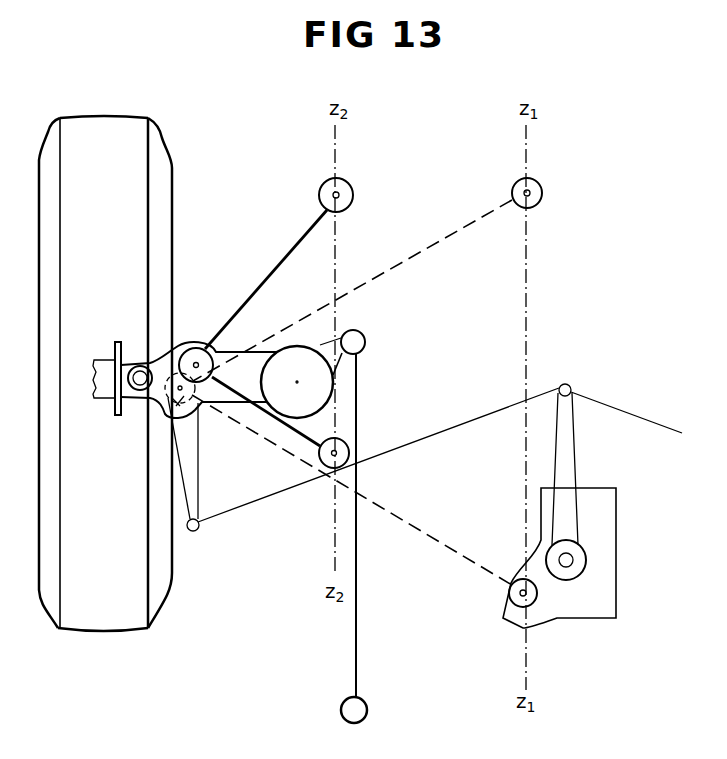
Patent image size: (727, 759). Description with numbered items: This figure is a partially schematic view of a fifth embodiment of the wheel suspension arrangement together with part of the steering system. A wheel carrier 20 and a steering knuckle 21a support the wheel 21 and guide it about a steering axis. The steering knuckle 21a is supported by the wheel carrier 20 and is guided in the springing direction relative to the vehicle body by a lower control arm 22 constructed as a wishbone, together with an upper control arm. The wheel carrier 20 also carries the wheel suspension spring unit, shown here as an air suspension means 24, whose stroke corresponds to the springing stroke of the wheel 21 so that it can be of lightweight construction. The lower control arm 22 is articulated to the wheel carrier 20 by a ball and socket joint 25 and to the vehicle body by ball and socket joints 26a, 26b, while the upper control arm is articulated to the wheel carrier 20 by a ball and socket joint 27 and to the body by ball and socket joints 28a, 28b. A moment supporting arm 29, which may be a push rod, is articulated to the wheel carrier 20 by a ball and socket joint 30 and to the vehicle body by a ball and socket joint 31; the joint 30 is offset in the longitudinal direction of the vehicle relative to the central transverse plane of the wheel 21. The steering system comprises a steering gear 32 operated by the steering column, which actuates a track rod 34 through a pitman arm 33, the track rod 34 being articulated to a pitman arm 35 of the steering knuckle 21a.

The wheel carrier 20 is at (255, 366).
The wheel 21 is at (130, 128).
The steering knuckle 21a is at (115, 360).
The lower control arm 22 is at (425, 244).
The air suspension means 24 is at (332, 401).
The ball and socket joint 25 is at (184, 398).
The ball and socket joint 26a is at (537, 603).
The ball and socket joint 26b is at (543, 197).
The ball and socket joint 27 is at (195, 346).
The ball and socket joint 28a is at (350, 462).
The ball and socket joint 28b is at (354, 190).
The moment supporting arm 29 is at (358, 598).
The ball and socket joint 30 is at (366, 342).
The ball and socket joint 31 is at (363, 720).
The steering gear 32 is at (600, 597).
The pitman arm 33 is at (571, 475).
The track rod 34 is at (423, 441).
The pitman arm 35 is at (197, 497).